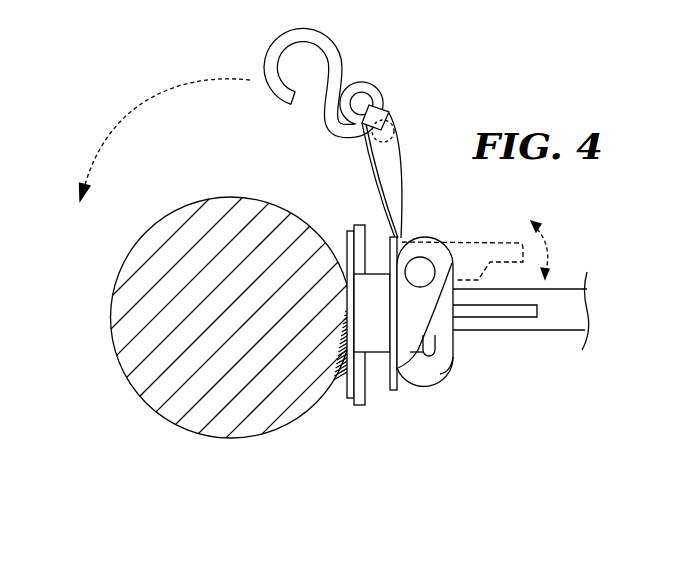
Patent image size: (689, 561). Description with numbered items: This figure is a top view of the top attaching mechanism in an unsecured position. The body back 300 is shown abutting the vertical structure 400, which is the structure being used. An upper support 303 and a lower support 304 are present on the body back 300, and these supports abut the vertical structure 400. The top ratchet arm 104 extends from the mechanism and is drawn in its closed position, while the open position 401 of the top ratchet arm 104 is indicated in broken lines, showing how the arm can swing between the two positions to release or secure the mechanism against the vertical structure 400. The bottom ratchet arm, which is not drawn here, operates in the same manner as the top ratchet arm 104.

The top ratchet arm 104 is at (454, 347).
The body back 300 is at (325, 345).
The upper support 303 is at (362, 224).
The lower support 304 is at (347, 228).
The vertical structure 400 is at (113, 333).
The open position 401 is at (465, 248).